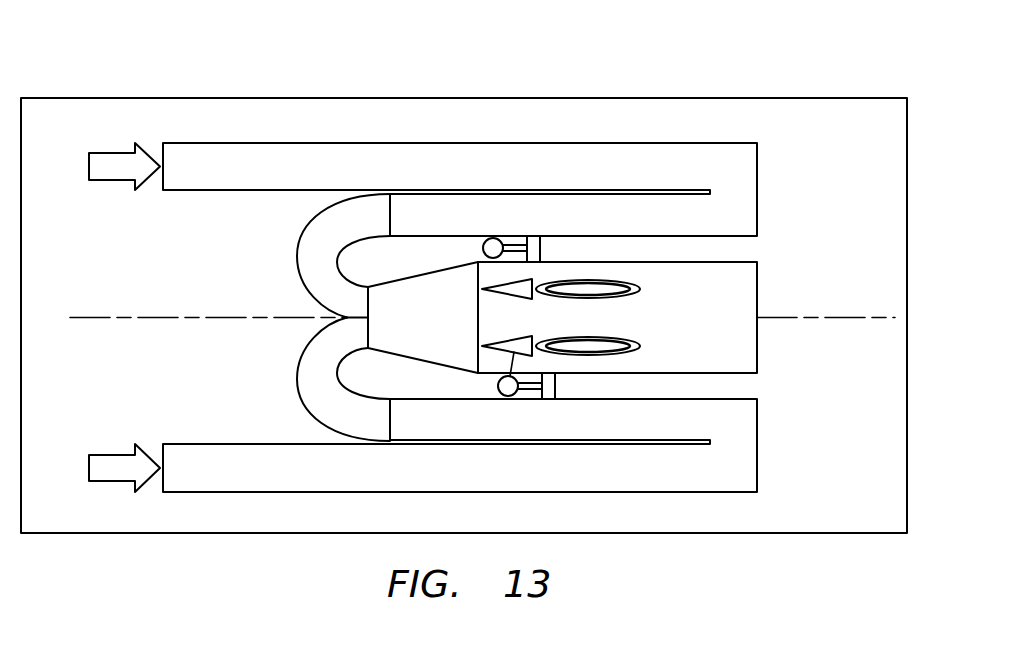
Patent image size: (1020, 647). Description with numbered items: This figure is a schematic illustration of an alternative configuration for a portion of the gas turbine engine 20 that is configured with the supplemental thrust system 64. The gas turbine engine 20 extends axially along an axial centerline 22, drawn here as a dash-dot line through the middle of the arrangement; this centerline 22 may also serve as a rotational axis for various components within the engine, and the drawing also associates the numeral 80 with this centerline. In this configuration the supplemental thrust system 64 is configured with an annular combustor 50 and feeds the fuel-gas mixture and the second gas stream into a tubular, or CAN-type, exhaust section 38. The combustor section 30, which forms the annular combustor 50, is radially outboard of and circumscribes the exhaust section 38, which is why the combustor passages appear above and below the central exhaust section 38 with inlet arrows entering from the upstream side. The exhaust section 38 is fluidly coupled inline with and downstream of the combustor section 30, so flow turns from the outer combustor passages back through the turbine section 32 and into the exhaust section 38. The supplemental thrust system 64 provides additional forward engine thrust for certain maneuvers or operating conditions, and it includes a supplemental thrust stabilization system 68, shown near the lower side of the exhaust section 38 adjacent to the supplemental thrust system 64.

The gas turbine engine 20 is at (464, 267).
The axial centerline 22 is at (481, 366).
The thrust axis 80 is at (77, 319).
The combustor section 30 is at (479, 317).
The annular combustor 50 is at (758, 193).
The turbine section 32 is at (398, 358).
The exhaust section 38 is at (760, 291).
The supplemental thrust system 64 is at (493, 384).
The supplemental thrust stabilization system 68 is at (516, 395).